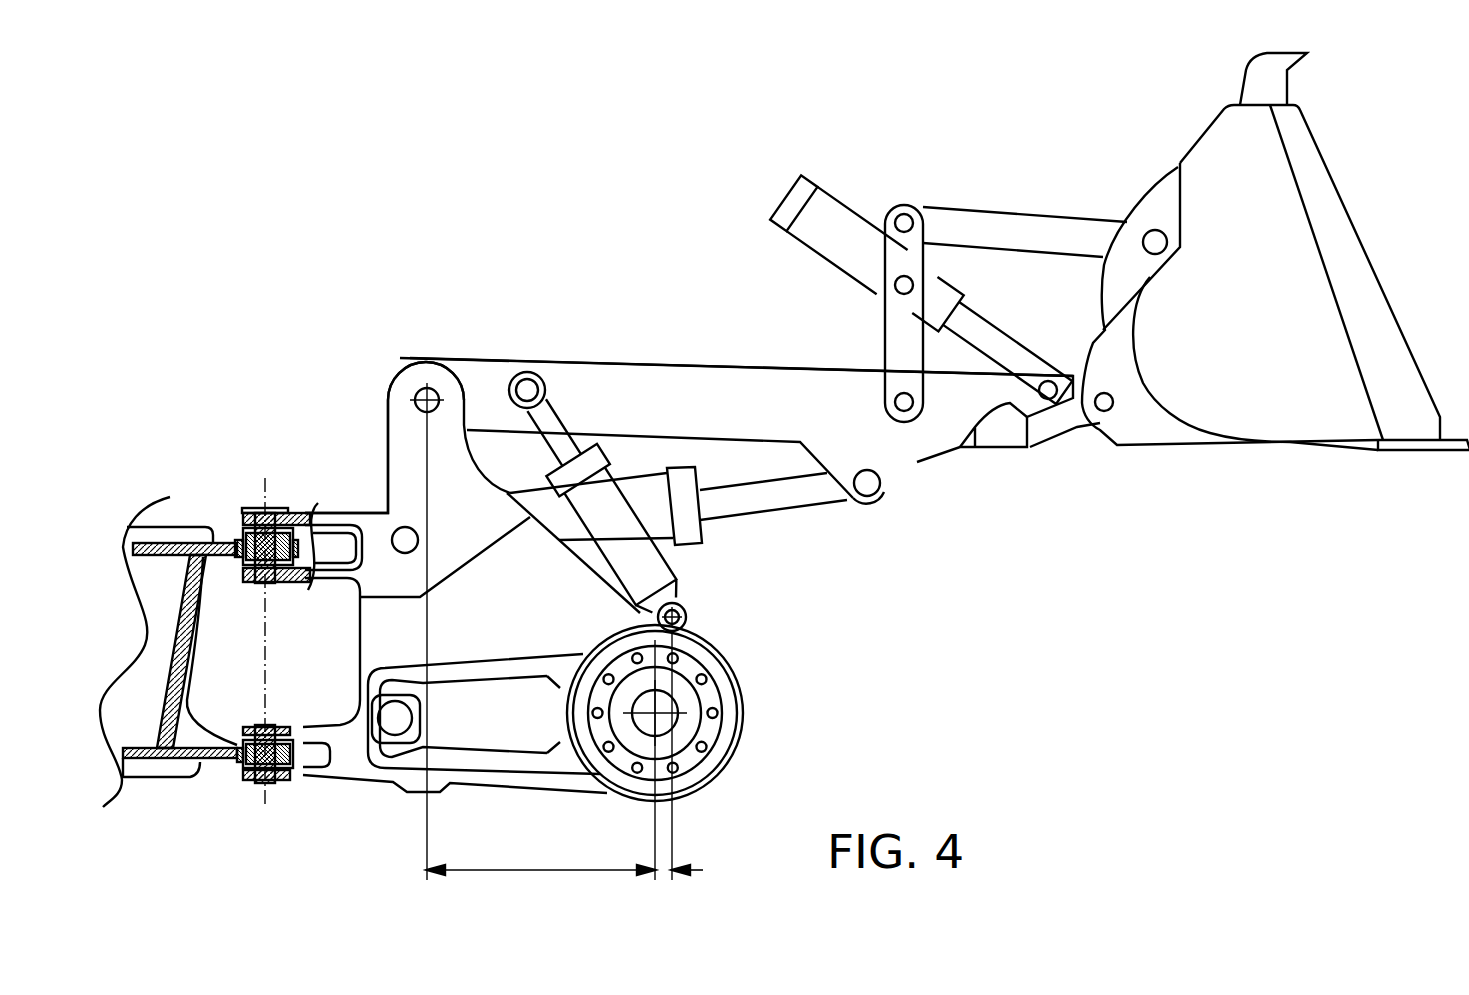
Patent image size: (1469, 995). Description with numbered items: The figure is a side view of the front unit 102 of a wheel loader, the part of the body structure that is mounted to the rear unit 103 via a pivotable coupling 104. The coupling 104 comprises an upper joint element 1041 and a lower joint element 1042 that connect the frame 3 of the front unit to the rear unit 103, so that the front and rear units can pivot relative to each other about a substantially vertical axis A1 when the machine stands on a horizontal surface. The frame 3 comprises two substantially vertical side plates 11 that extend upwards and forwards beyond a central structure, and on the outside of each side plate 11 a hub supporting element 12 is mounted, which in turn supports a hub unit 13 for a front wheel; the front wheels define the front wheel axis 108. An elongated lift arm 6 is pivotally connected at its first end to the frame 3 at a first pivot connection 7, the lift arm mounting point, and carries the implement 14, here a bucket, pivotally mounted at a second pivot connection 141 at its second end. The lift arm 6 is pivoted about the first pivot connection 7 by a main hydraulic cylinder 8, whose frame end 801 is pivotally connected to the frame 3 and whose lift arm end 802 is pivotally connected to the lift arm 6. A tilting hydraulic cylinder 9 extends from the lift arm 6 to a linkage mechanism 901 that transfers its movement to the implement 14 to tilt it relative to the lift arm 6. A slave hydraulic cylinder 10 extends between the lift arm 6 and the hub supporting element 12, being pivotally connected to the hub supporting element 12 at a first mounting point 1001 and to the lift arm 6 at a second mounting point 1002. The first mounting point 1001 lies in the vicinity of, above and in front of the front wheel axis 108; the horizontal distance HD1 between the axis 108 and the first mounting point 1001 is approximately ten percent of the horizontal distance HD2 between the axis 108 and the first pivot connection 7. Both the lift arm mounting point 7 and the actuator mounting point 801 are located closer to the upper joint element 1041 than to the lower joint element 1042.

The front unit 102 is at (588, 179).
The pivotable coupling 104 is at (170, 409).
The rear unit 103 is at (197, 763).
The vertical axis A1 is at (264, 478).
The upper joint element 1041 is at (253, 507).
The lower joint element 1042 is at (253, 780).
The frame 3 is at (405, 470).
The side plate 11 is at (384, 437).
The first pivot connection 7 is at (420, 395).
The frame end 801 is at (400, 540).
The lift arm 6 is at (650, 400).
The main hydraulic cylinder 8 is at (778, 497).
The lift arm end 802 is at (871, 496).
The slave hydraulic cylinder 10 is at (640, 560).
The second mounting point 1002 is at (520, 373).
The first mounting point 1001 is at (690, 606).
The hub unit 13 is at (745, 710).
The front wheel axis 108 is at (655, 713).
The hub supporting element 12 is at (400, 763).
The horizontal distance HD2 is at (541, 860).
The horizontal distance HD1 is at (715, 860).
The tilting hydraulic cylinder 9 is at (848, 240).
The linkage mechanism 901 is at (1003, 233).
The implement 14 is at (1195, 142).
The second pivot connection 141 is at (1110, 410).